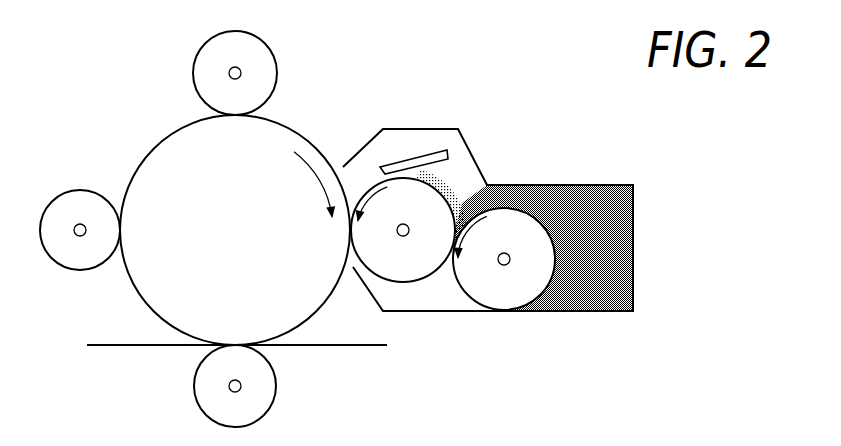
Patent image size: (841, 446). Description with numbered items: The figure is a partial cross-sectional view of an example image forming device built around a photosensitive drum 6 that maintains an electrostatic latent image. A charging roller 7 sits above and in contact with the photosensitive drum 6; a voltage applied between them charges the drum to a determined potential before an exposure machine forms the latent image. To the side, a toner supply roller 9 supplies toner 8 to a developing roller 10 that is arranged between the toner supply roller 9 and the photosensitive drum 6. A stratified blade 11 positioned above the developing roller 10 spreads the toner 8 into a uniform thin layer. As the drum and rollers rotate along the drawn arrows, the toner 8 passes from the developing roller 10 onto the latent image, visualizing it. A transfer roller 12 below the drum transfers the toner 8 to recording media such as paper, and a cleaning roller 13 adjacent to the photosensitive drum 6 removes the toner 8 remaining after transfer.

The photosensitive drum 6 is at (197, 165).
The charging roller 7 is at (257, 63).
The toner 8 is at (586, 210).
The toner supply roller 9 is at (502, 293).
The developing roller 10 is at (416, 260).
The stratified blade 11 is at (418, 158).
The transfer roller 12 is at (265, 389).
The cleaning roller 13 is at (76, 192).